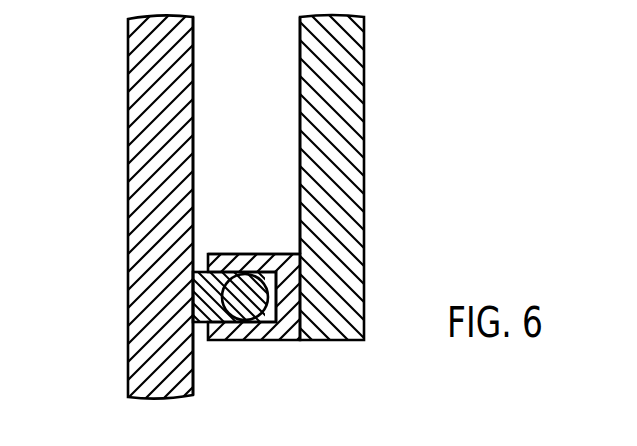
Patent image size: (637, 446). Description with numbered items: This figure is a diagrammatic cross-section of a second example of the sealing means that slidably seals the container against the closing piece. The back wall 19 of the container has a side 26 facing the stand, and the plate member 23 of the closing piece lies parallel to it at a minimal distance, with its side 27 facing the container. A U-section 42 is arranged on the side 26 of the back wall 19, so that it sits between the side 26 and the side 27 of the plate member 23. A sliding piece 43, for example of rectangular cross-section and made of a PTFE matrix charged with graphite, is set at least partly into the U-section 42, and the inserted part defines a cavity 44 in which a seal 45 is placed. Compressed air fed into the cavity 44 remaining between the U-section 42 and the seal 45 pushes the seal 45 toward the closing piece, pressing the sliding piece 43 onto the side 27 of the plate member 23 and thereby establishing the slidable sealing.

The back wall 19 is at (364, 98).
The plate member 23 is at (128, 93).
The side of the back wall facing the stand 26 is at (300, 53).
The side of the plate member facing the container 27 is at (193, 98).
The U-section 42 is at (260, 256).
The sliding piece 43 is at (197, 312).
The cavity 44 is at (267, 312).
The seal 45 is at (225, 255).